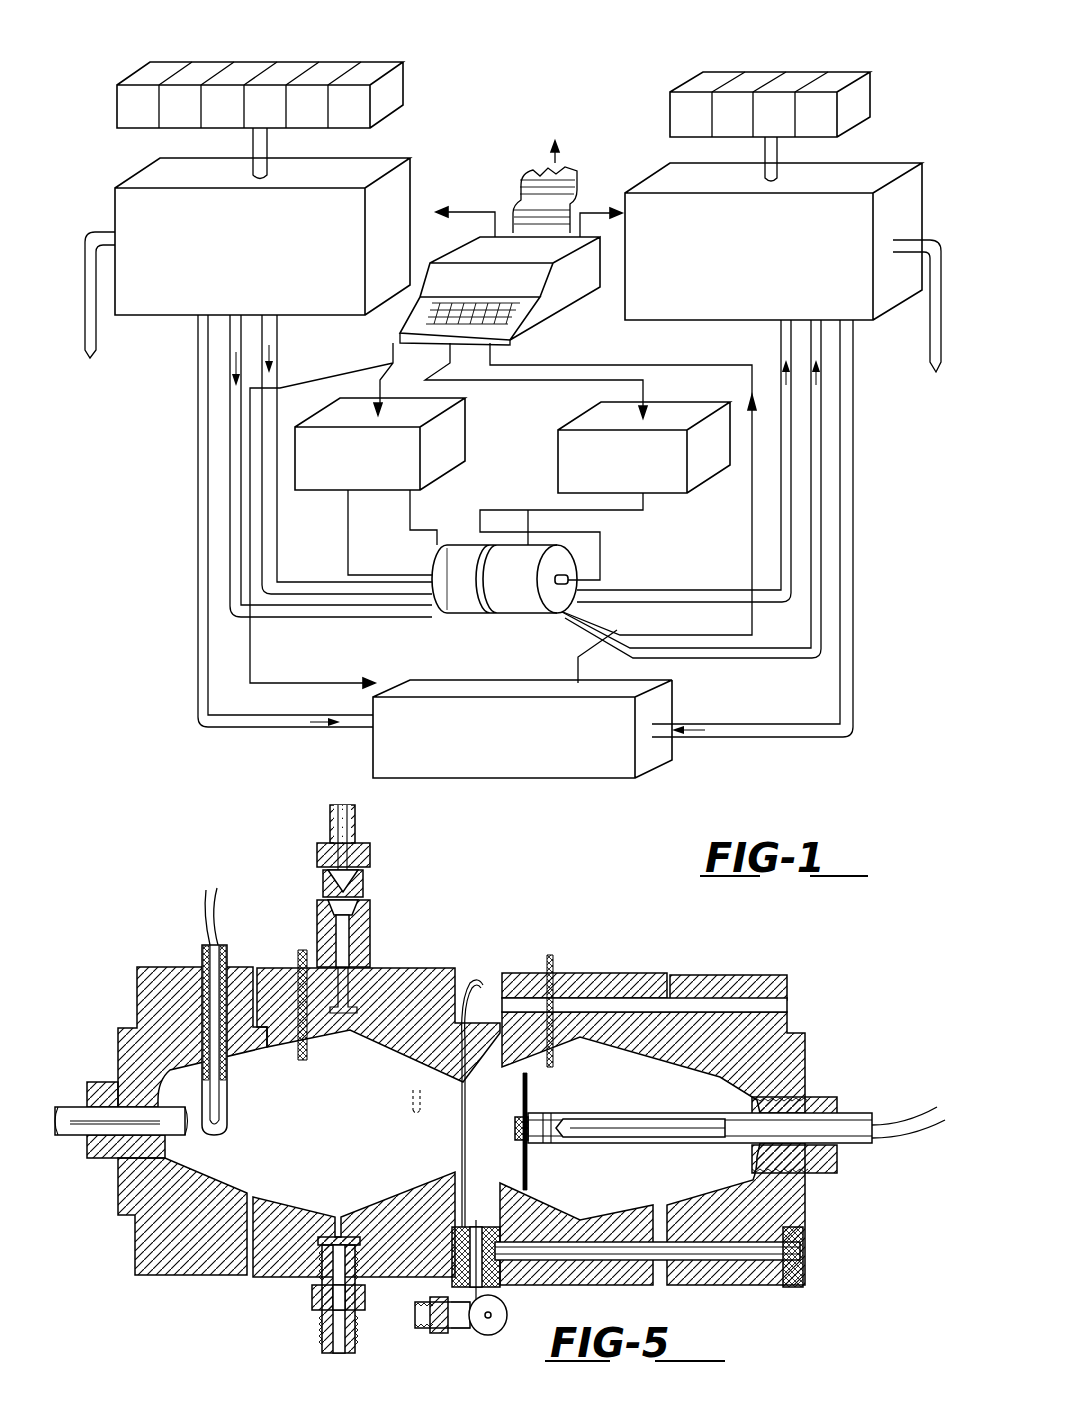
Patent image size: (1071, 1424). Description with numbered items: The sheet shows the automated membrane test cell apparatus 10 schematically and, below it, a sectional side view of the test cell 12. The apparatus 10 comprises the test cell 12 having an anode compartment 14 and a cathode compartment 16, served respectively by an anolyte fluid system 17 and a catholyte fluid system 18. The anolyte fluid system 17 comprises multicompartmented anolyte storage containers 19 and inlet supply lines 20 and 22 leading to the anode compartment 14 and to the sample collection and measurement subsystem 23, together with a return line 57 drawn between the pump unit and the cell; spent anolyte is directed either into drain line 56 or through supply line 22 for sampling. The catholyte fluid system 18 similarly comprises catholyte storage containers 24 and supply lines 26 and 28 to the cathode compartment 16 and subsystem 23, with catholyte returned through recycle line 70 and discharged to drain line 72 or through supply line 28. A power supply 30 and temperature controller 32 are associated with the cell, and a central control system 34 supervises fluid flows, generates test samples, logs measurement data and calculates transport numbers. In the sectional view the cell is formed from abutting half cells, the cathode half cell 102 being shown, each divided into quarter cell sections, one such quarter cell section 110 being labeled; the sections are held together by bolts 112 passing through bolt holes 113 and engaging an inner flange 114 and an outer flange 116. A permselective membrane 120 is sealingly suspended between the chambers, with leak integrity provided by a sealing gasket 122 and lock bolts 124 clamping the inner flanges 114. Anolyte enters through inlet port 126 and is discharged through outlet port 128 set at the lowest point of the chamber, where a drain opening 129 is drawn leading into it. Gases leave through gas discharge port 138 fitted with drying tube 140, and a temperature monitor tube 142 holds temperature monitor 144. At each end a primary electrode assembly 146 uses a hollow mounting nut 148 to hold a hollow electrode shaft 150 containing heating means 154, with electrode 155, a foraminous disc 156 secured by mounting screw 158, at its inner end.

In FIG. 1, the automated membrane test cell apparatus 10 is at (548, 52).
In FIG. 1, the test cell 12 is at (442, 547).
In FIG. 5, the test cell 12 is at (533, 934).
In FIG. 1, the anode compartment 14 is at (433, 563).
In FIG. 5, the anode compartment 14 is at (161, 957).
In FIG. 1, the cathode compartment 16 is at (565, 566).
In FIG. 5, the cathode compartment 16 is at (785, 967).
In FIG. 1, the anolyte fluid system 17 is at (173, 405).
In FIG. 1, the catholyte fluid system 18 is at (875, 425).
In FIG. 1, the anolyte storage containers 19 is at (403, 76).
In FIG. 1, the inlet supply line 20 is at (313, 583).
In FIG. 1, the supply line 22 is at (198, 630).
In FIG. 1, the sample collection and measurement subsystem 23 is at (673, 750).
In FIG. 1, the catholyte storage containers 24 is at (670, 107).
In FIG. 1, the inlet supply line 26 is at (673, 590).
In FIG. 1, the supply line 28 is at (853, 607).
In FIG. 1, the power supply 30 is at (453, 433).
In FIG. 1, the temperature controller 32 is at (558, 458).
In FIG. 1, the central control system 34 is at (557, 317).
In FIG. 1, the drain line 56 is at (96, 343).
In FIG. 1, the anolyte return line 57 is at (287, 618).
In FIG. 1, the recycle line 70 is at (750, 658).
In FIG. 1, the drain line 72 is at (933, 332).
In FIG. 5, the cathode half cell 102 is at (580, 972).
In FIG. 5, the quarter cell section 110 is at (447, 970).
In FIG. 5, the bolt 112 is at (740, 1262).
In FIG. 5, the bolt hole 113 is at (705, 975).
In FIG. 5, the inner flange 114 is at (500, 1280).
In FIG. 5, the outer flange 116 is at (806, 1250).
In FIG. 5, the permselective membrane 120 is at (456, 1142).
In FIG. 5, the sealing gasket 122 is at (478, 1062).
In FIG. 5, the lock bolt 124 is at (440, 1318).
In FIG. 5, the inlet port 126 is at (410, 1100).
In FIG. 5, the outlet port 128 is at (317, 1303).
In FIG. 5, the drain port 129 is at (337, 1215).
In FIG. 5, the gas discharge port 138 is at (340, 1046).
In FIG. 5, the drying tube 140 is at (362, 842).
In FIG. 5, the temperature monitor tube 142 is at (225, 962).
In FIG. 5, the temperature monitor 144 is at (218, 912).
In FIG. 5, the primary electrode assembly 146 is at (813, 1087).
In FIG. 5, the hollow mounting nut 148 is at (838, 1100).
In FIG. 5, the hollow electrode shaft 150 is at (705, 1115).
In FIG. 5, the heating means 154 is at (683, 1140).
In FIG. 5, the electrode 155 is at (558, 1112).
In FIG. 5, the foraminous disc 156 is at (527, 1178).
In FIG. 5, the mounting screw 158 is at (515, 1130).